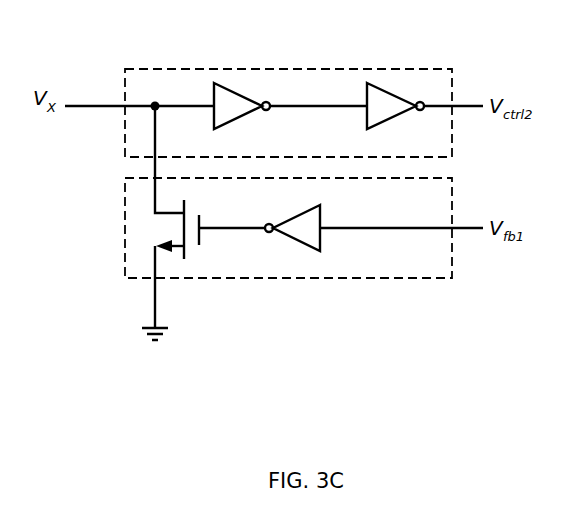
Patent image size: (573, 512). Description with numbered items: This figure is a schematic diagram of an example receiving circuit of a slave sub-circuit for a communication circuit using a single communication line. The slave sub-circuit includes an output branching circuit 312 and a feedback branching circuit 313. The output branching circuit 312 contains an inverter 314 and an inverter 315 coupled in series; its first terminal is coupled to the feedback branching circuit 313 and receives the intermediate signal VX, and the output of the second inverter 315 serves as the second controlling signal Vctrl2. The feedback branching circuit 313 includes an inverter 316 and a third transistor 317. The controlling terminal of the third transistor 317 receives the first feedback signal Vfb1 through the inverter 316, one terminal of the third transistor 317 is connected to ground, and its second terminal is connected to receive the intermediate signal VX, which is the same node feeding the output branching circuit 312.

The output branching circuit 312 is at (317, 77).
The feedback branching circuit 313 is at (413, 272).
The inverter 314 is at (230, 108).
The inverter 315 is at (383, 112).
The inverter 316 is at (310, 232).
The third transistor 317 is at (173, 229).